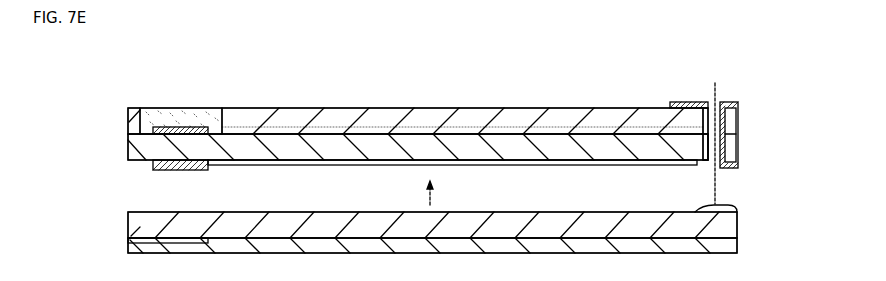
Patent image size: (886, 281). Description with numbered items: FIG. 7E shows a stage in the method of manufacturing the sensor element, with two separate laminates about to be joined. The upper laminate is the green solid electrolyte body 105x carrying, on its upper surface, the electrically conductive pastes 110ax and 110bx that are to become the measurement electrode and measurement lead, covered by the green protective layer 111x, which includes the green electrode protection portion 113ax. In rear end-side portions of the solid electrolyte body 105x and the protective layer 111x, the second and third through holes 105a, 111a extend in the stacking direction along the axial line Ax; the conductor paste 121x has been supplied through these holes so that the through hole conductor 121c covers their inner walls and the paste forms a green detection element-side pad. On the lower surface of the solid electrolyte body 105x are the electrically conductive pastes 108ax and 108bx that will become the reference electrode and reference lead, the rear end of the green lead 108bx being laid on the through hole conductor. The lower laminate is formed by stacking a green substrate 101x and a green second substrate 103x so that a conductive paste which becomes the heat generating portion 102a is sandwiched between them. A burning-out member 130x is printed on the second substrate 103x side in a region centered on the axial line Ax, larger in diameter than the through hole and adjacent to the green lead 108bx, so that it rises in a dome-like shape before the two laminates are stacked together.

The green protective layer 111x is at (128, 124).
The green solid electrolyte body 105x is at (128, 146).
The green electrode protection portion 113ax is at (165, 106).
The electrically conductive paste 110ax is at (202, 127).
The electrically conductive paste 110bx is at (433, 126).
The electrically conductive paste 108ax is at (178, 171).
The electrically conductive paste 108bx is at (310, 166).
The conductor paste 121x is at (686, 101).
The third through hole 111a is at (716, 88).
The second through hole 105a is at (705, 147).
The axial line Ax is at (714, 95).
The through hole conductor 121c is at (731, 126).
The burning-out member 130x is at (700, 208).
The green second substrate 103x is at (726, 229).
The green substrate 101x is at (737, 246).
The heat generating portion 102a is at (135, 245).